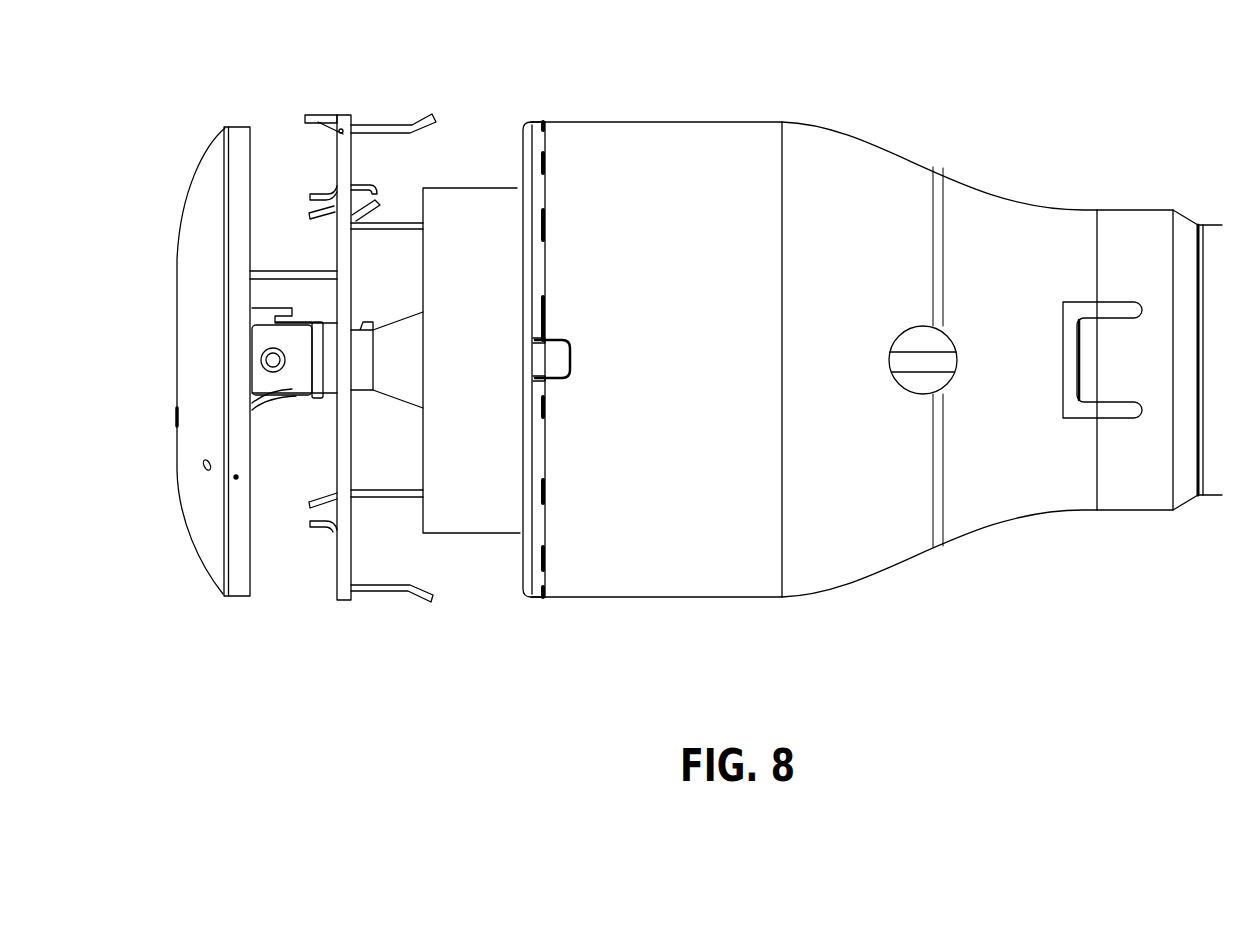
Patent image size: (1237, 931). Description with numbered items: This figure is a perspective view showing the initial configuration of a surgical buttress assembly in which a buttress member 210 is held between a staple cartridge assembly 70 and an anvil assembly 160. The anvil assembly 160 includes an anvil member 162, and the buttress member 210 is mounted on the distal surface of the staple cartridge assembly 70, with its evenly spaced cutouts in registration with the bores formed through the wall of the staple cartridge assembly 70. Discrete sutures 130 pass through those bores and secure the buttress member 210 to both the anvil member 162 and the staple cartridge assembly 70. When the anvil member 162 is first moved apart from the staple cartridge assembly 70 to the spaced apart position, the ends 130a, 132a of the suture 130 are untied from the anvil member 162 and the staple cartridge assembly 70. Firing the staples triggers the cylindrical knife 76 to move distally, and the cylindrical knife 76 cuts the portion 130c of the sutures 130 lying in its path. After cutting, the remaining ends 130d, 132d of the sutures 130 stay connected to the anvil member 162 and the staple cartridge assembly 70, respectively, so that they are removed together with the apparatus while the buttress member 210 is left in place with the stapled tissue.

The staple cartridge assembly 70 is at (629, 118).
The cylindrical knife 76 is at (472, 534).
The suture 130 is at (343, 134).
The end of suture 130a is at (316, 116).
The portion of suture 130c is at (310, 212).
The end of suture 130d is at (253, 276).
The end of suture 132a is at (433, 117).
The end of suture 132d is at (378, 226).
The anvil assembly 160 is at (240, 123).
The anvil member 162 is at (196, 188).
The buttress member 210 is at (345, 575).